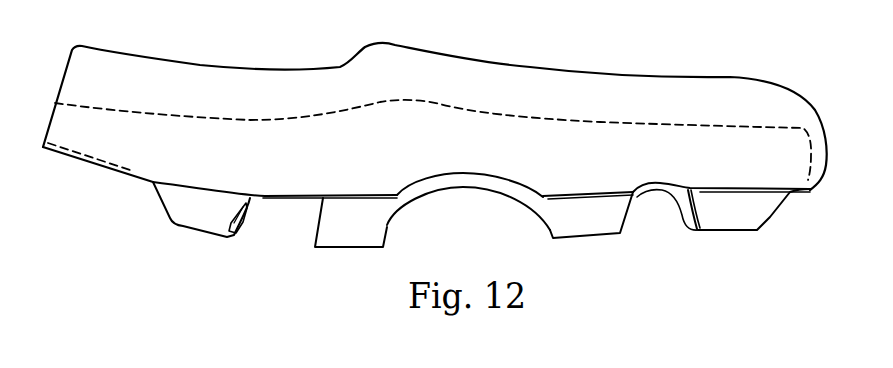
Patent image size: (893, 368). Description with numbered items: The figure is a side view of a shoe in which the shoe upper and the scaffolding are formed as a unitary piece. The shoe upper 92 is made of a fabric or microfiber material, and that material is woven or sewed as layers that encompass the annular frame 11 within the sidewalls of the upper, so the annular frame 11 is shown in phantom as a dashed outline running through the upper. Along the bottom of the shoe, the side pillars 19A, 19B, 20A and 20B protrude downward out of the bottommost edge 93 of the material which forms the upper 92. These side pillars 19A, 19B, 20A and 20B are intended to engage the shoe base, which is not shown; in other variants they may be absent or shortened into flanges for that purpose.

The shoe upper 92 is at (548, 66).
The annular frame 11 is at (637, 140).
The bottommost edge 93 is at (263, 195).
The side pillar 20A is at (200, 236).
The side pillar 20B is at (353, 247).
The side pillar 19A is at (592, 238).
The side pillar 19B is at (723, 237).